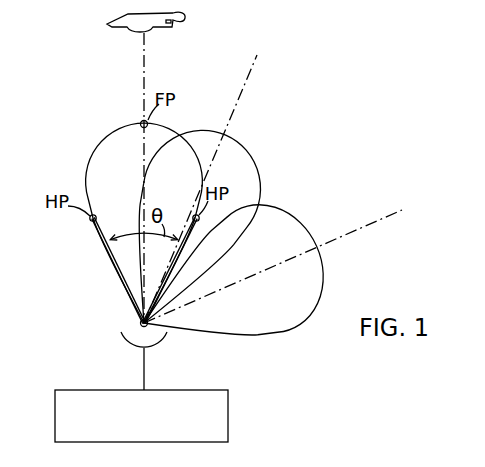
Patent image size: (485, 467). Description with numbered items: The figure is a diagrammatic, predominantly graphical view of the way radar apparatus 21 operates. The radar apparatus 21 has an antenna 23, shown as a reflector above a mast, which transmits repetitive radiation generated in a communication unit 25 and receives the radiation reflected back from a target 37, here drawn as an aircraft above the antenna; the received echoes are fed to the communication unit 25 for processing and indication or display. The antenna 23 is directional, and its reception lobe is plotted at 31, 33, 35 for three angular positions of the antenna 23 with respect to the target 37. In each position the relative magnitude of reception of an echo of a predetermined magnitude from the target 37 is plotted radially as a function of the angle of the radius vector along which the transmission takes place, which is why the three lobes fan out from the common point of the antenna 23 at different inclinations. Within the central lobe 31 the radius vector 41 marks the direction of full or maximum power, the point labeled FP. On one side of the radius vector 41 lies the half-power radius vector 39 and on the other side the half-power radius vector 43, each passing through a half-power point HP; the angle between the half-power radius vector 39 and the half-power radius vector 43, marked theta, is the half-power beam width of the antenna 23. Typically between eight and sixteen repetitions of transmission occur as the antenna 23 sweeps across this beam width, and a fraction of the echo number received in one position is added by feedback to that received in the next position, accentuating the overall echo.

The radar apparatus 21 is at (166, 387).
The antenna 23 is at (160, 343).
The communication unit 25 is at (109, 389).
The reception lobe 31 is at (112, 132).
The reception lobe 33 is at (239, 151).
The reception lobe 35 is at (281, 211).
The target 37 is at (113, 23).
The half-power radius vector 39 is at (116, 268).
The full-power radius vector 41 is at (142, 141).
The half-power radius vector 43 is at (200, 218).